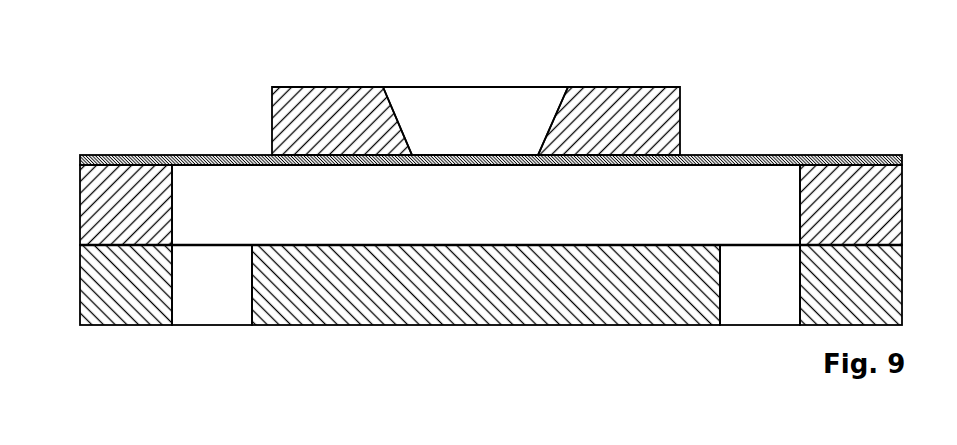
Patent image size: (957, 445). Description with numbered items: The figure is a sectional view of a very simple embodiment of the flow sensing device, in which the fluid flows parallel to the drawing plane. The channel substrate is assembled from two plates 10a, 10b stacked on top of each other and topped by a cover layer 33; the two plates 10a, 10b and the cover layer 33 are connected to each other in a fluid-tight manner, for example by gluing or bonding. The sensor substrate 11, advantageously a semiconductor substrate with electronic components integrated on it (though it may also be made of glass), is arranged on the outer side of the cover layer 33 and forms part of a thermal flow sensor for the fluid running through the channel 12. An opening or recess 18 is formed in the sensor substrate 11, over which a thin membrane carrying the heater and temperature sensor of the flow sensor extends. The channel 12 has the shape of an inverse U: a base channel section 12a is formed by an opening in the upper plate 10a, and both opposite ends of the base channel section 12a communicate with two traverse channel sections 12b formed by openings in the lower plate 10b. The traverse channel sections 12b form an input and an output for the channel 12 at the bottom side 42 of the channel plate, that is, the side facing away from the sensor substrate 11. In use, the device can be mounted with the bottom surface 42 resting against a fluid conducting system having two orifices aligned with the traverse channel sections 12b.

The sensor substrate 11 is at (467, 94).
The opening or recess 18 is at (491, 115).
The cover layer 33 is at (491, 124).
The upper plate 10a is at (465, 203).
The lower plate 10b is at (463, 285).
The channel 12 is at (522, 215).
The base channel section 12a is at (486, 178).
The traverse channel sections 12b is at (476, 318).
The bottom side 42 is at (486, 313).